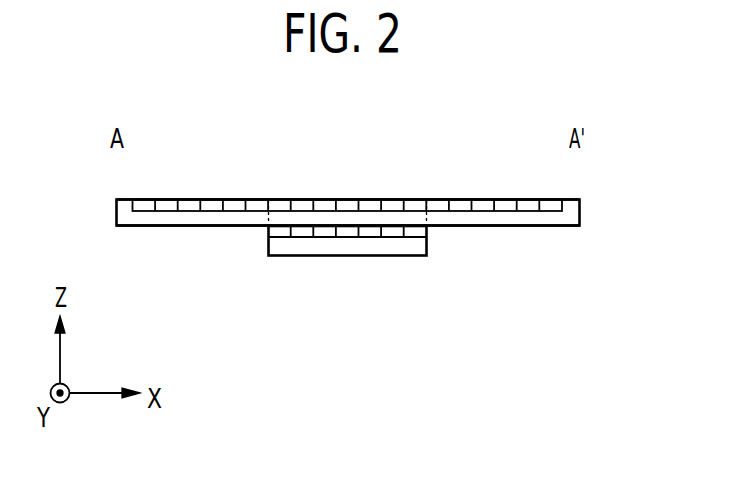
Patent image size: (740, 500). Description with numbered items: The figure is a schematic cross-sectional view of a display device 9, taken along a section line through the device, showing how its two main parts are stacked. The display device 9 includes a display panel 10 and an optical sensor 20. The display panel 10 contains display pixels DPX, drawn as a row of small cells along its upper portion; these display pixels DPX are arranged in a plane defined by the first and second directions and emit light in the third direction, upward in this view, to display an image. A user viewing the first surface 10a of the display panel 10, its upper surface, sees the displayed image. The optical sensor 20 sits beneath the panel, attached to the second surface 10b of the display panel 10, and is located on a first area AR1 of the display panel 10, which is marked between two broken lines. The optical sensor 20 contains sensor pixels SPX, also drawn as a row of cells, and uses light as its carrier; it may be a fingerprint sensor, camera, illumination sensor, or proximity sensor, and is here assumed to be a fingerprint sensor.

The display device 9 is at (370, 228).
The display panel 10 is at (347, 204).
The first surface of the display panel 10a is at (472, 200).
The second surface of the display panel 10b is at (495, 227).
The optical sensor 20 is at (415, 272).
The display pixels DPX is at (133, 204).
The sensor pixels SPX is at (268, 232).
The first area of the display panel AR1 is at (347, 220).